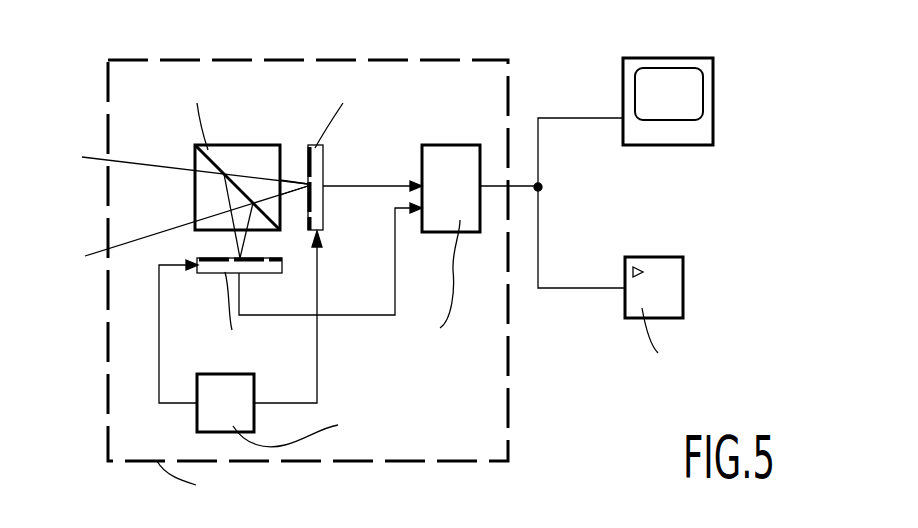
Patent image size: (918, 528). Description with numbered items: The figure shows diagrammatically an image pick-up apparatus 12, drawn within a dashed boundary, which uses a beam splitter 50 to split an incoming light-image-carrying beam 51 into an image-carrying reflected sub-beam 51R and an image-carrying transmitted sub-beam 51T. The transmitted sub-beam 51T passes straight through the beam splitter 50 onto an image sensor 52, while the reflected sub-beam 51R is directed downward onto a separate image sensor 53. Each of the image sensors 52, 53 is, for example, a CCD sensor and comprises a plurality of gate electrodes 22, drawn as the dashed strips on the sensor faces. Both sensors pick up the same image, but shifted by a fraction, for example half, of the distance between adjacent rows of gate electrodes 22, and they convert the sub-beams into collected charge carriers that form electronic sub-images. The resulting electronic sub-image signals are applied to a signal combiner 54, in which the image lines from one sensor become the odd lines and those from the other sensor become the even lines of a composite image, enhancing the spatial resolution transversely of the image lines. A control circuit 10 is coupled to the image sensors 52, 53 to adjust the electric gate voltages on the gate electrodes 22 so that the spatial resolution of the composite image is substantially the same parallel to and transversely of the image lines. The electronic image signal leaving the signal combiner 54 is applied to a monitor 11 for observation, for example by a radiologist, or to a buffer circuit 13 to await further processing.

The control circuit 10 is at (243, 419).
The monitor 11 is at (704, 130).
The image pick-up apparatus 12 is at (500, 434).
The buffer circuit 13 is at (672, 270).
The gate electrodes 22 is at (323, 216).
The beam splitter 50 is at (247, 145).
The light-image-carrying beam 51 is at (149, 181).
The transmitted sub-beam 51T is at (290, 188).
The reflected sub-beam 51R is at (234, 238).
The image sensor 52 is at (323, 158).
The image sensor 53 is at (277, 273).
The signal combiner 54 is at (450, 160).